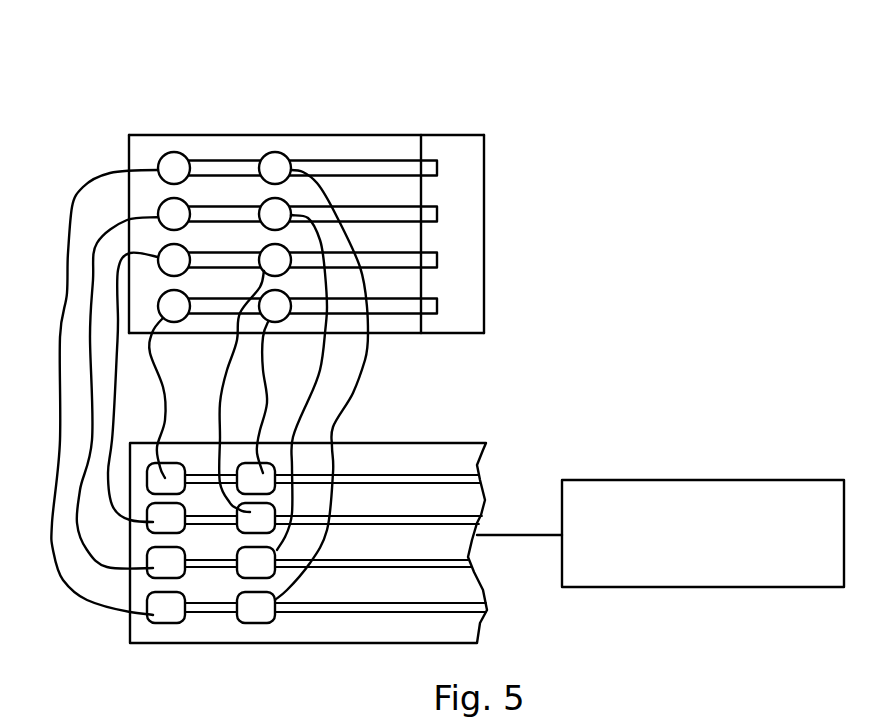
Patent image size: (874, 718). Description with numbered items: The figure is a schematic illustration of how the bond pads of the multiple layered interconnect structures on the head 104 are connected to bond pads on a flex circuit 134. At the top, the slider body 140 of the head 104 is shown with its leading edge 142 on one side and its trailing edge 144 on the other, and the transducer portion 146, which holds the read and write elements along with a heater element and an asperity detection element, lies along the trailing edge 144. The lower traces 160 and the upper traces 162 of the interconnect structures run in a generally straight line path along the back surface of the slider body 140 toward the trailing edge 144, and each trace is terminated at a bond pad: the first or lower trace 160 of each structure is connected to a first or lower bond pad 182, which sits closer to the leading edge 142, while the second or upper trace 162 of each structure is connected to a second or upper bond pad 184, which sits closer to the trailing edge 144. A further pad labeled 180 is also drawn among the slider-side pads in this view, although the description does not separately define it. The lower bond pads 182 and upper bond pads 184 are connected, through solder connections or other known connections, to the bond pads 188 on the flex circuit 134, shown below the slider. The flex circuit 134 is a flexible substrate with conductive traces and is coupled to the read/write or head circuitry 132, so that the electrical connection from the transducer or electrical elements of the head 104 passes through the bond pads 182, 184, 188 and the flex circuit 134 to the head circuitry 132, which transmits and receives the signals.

The head 104 is at (305, 195).
The head circuitry 132 is at (806, 478).
The flex circuit 134 is at (253, 537).
The slider body 140 is at (202, 142).
The leading edge 142 is at (129, 153).
The trailing edge 144 is at (485, 240).
The transducer portion 146 is at (472, 145).
The lower trace 160 is at (228, 231).
The upper trace 162 is at (348, 168).
The contact 180 is at (177, 312).
The lower bond pad 182 is at (167, 257).
The upper bond pad 184 is at (277, 258).
The bond pads 188 is at (153, 526).